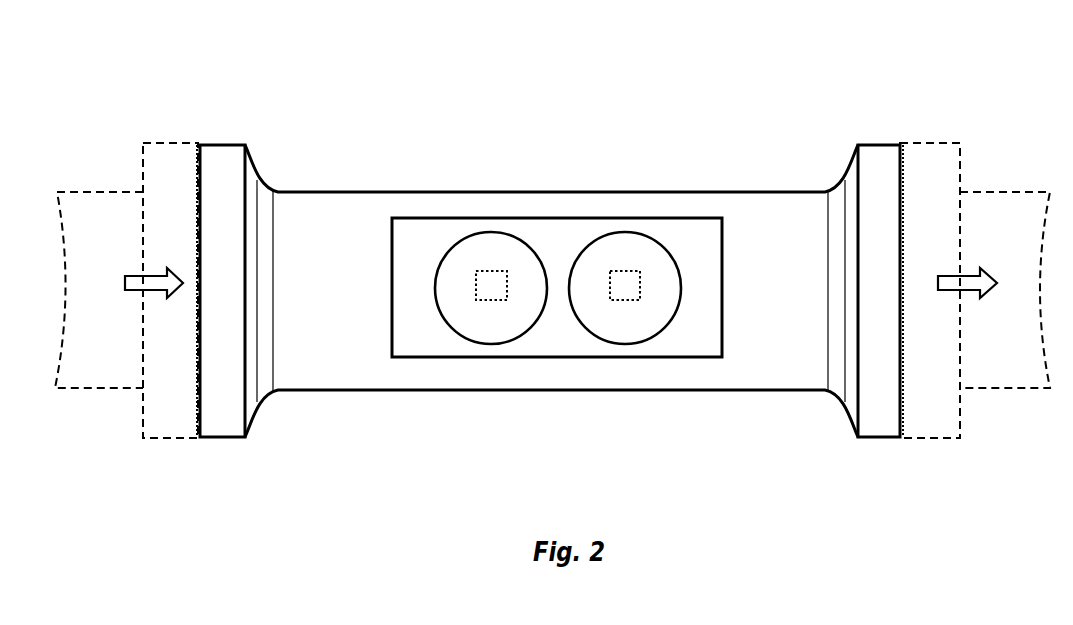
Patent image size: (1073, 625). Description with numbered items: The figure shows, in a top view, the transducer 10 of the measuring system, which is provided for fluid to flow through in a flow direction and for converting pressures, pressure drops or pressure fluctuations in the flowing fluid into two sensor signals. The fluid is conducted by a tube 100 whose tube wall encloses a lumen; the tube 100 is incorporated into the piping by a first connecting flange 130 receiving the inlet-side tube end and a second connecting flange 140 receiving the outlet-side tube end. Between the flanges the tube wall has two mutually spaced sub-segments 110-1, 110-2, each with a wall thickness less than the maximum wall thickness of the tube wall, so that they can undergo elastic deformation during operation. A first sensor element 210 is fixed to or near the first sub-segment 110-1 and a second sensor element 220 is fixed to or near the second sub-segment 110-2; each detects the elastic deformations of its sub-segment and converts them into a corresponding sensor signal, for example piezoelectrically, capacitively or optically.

The transducer 10 is at (552, 261).
The tube 100 is at (340, 372).
The first connecting flange 130 is at (218, 157).
The second connecting flange 140 is at (878, 162).
The first sub-segment 110-1 is at (482, 325).
The second sub-segment 110-2 is at (628, 322).
The first sensor element 210 is at (493, 280).
The second sensor element 220 is at (618, 277).